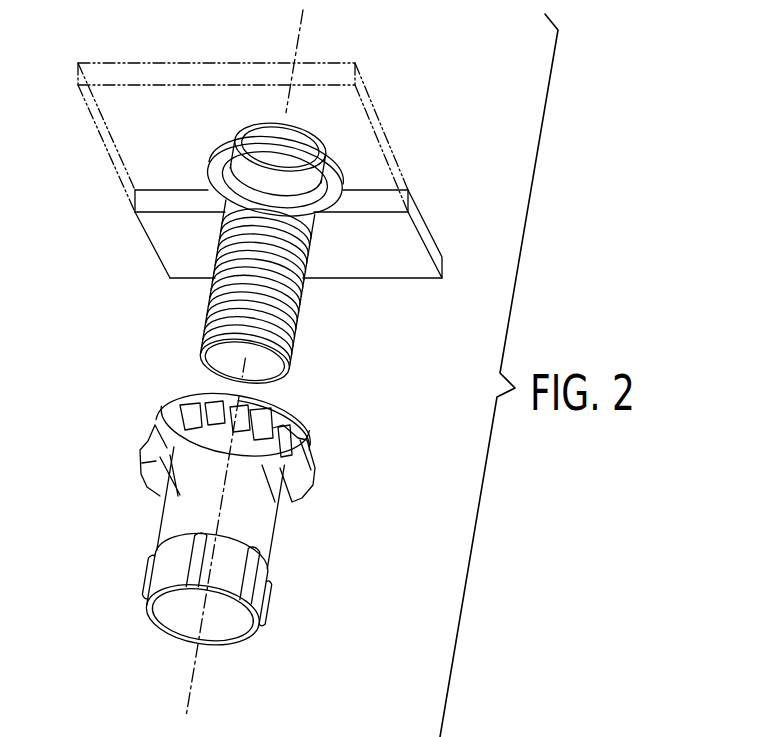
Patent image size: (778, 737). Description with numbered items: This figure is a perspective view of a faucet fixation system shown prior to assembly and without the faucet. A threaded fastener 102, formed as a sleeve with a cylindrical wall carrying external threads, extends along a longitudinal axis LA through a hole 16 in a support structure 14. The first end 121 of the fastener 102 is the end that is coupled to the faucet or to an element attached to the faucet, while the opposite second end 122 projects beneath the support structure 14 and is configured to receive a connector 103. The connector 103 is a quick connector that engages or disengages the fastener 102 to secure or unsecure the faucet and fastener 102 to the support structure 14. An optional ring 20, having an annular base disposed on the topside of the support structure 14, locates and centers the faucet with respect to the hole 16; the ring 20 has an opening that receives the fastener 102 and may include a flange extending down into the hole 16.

The support structure 14 is at (424, 228).
The hole 16 is at (318, 186).
The ring 20 is at (186, 165).
The fastener 102 is at (275, 236).
The connector 103 is at (123, 521).
The first end 121 is at (308, 133).
The second end 122 is at (283, 330).
The longitudinal axis LA is at (240, 397).